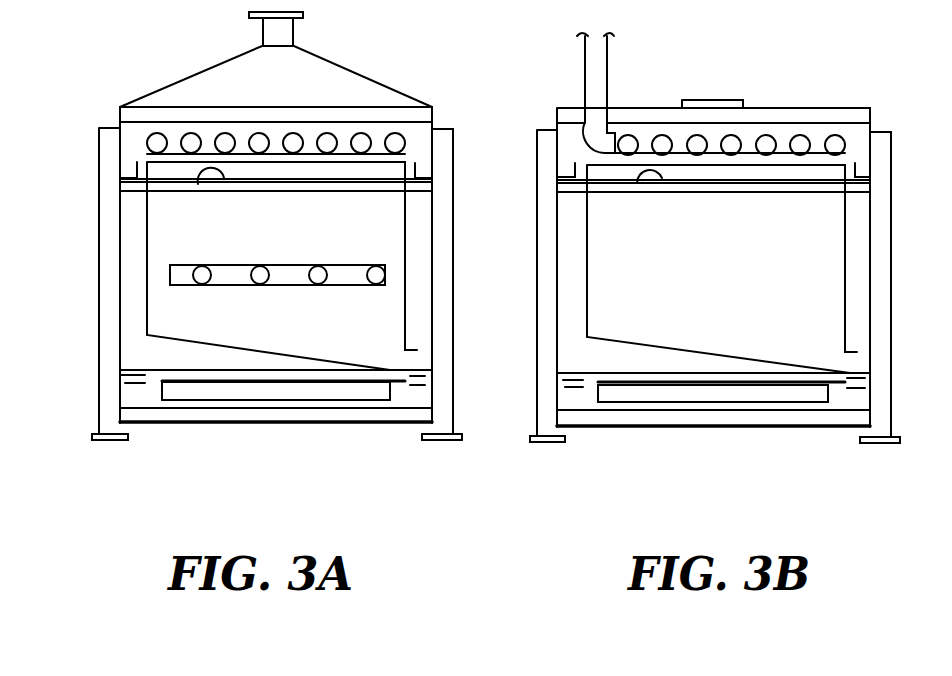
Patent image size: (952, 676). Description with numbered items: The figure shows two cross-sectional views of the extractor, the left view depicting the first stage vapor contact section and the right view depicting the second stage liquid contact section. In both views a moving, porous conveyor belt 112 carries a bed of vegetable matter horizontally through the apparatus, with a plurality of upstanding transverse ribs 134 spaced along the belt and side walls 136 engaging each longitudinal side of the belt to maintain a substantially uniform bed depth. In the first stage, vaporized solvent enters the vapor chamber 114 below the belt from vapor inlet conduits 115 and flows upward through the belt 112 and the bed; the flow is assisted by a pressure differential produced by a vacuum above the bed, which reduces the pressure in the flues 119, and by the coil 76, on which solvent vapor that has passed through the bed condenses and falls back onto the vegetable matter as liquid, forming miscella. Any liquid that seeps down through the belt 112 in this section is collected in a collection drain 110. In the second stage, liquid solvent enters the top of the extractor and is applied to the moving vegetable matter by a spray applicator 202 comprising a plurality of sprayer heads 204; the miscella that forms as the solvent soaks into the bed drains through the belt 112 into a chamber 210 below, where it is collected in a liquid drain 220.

In FIG. 3A, the coil 76 is at (316, 138).
In FIG. 3A, the collection drain 110 is at (410, 362).
In FIG. 3A, the conveyor belt 112 is at (198, 184).
In FIG. 3B, the conveyor belt 112 is at (637, 183).
In FIG. 3A, the first stage vapor chamber 114 is at (299, 240).
In FIG. 3A, the vapor inlet conduits 115 is at (228, 280).
In FIG. 3A, the flue 119 is at (262, 35).
In FIG. 3A, the upstanding transverse ribs 134 is at (345, 173).
In FIG. 3B, the upstanding transverse ribs 134 is at (795, 173).
In FIG. 3A, the side walls 136 is at (133, 174).
In FIG. 3B, the side walls 136 is at (573, 172).
In FIG. 3B, the spray applicator 202 is at (585, 62).
In FIG. 3B, the sprayer heads 204 is at (783, 137).
In FIG. 3B, the chamber 210 is at (737, 280).
In FIG. 3B, the liquid drain 220 is at (855, 364).